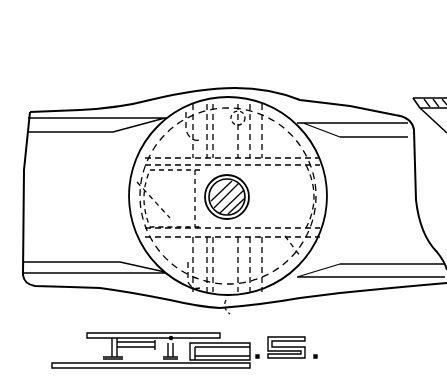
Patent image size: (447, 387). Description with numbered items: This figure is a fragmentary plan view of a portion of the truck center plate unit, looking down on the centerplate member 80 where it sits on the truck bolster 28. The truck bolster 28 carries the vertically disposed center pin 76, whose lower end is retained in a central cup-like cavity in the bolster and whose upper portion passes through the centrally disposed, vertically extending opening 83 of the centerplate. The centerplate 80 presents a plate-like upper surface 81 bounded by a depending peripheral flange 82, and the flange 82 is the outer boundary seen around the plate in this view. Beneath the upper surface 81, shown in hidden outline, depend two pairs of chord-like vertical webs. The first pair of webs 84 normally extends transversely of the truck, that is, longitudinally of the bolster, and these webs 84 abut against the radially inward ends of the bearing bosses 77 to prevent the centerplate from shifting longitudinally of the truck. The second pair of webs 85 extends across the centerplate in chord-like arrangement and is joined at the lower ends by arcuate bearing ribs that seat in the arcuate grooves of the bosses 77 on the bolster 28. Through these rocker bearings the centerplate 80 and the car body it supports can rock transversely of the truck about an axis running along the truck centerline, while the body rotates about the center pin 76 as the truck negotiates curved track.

The truck bolster 28 is at (84, 92).
The center pin 76 is at (235, 212).
The bosses 77 is at (185, 105).
The centerplate member 80 is at (310, 122).
The plate-like upper surface 81 is at (303, 254).
The depending peripheral flange 82 is at (318, 192).
The vertically extending opening 83 is at (236, 190).
The first pair of webs 84 is at (140, 198).
The second pair of webs 85 is at (233, 104).